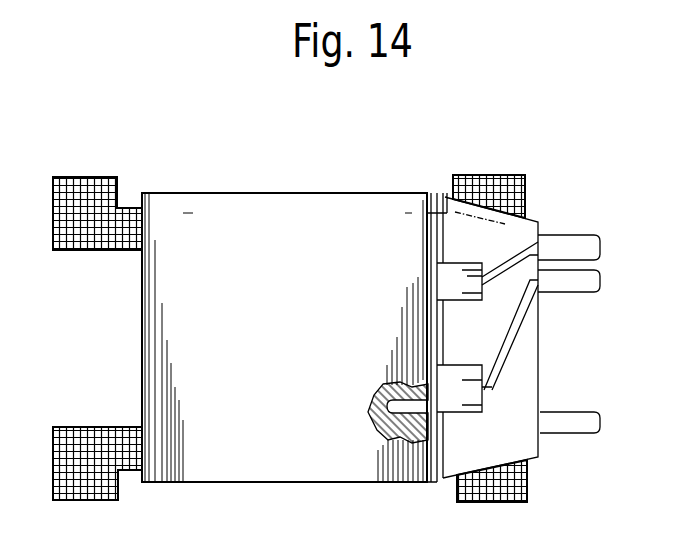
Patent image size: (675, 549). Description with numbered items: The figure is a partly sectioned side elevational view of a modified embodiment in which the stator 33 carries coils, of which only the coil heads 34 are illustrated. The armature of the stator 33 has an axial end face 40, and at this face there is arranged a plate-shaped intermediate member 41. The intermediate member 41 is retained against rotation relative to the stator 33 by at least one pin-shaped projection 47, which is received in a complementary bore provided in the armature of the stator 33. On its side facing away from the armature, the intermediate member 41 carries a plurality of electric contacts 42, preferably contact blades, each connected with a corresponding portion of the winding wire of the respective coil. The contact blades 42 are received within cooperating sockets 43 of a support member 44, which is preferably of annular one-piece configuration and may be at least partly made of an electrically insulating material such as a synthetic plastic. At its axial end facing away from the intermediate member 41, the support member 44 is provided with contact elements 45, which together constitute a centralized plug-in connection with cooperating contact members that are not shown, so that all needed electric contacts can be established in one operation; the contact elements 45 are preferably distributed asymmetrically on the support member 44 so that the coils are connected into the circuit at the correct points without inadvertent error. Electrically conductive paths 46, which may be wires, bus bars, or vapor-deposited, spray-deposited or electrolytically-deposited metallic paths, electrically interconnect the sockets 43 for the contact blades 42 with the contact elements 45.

The stator 33 is at (213, 461).
The coil heads 34 is at (512, 189).
The axial end face 40 is at (447, 212).
The intermediate member 41 is at (433, 483).
The electric contacts 42 is at (473, 398).
The sockets 43 is at (480, 260).
The support member 44 is at (523, 368).
The contact elements 45 is at (582, 248).
The electrically conductive paths 46 is at (518, 323).
The pin-shaped projection 47 is at (400, 483).